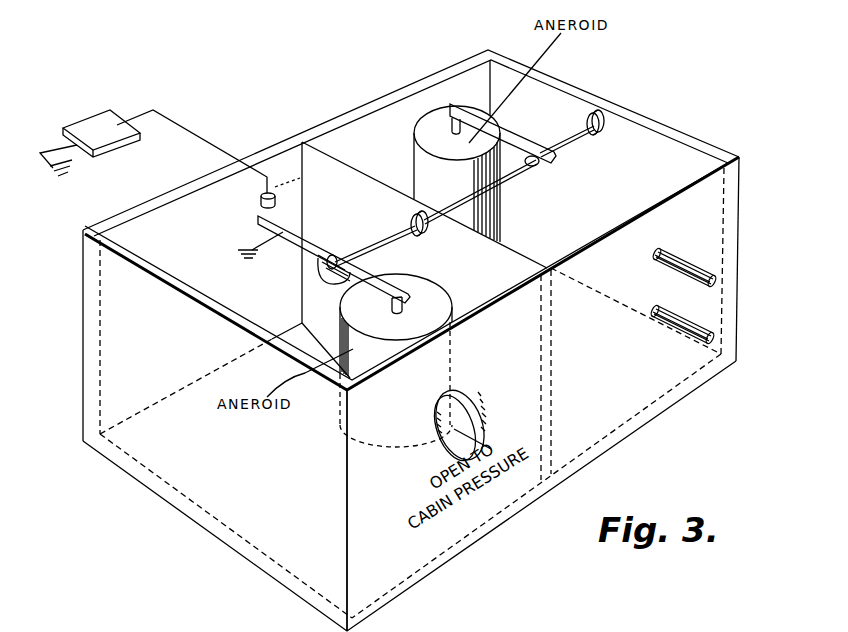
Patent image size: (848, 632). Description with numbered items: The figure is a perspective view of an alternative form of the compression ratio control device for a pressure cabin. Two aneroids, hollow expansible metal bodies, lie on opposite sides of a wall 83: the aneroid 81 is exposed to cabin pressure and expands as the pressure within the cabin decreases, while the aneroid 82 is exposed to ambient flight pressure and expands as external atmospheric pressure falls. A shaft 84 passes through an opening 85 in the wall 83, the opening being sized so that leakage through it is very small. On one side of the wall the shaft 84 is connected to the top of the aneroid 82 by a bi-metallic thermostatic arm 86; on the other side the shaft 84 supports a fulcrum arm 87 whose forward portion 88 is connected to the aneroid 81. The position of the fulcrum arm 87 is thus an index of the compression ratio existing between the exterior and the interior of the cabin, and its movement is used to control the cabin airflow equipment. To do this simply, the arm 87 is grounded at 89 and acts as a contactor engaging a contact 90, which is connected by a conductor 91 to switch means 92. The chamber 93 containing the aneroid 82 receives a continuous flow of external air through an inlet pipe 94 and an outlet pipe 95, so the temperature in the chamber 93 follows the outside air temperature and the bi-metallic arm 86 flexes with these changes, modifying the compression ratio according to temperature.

The aneroid 81 is at (440, 305).
The aneroid 82 is at (417, 133).
The wall 83 is at (524, 249).
The shaft 84 is at (362, 248).
The opening 85 is at (424, 229).
The bi-metallic thermostatic arm 86 is at (527, 141).
The fulcrum arm 87 is at (320, 278).
The forward portion 88 is at (383, 280).
The ground 89 is at (262, 244).
The contact 90 is at (259, 203).
The conductor 91 is at (220, 149).
The switch means 92 is at (115, 121).
The chamber 93 is at (576, 103).
The inlet pipe 94 is at (684, 257).
The outlet pipe 95 is at (667, 328).